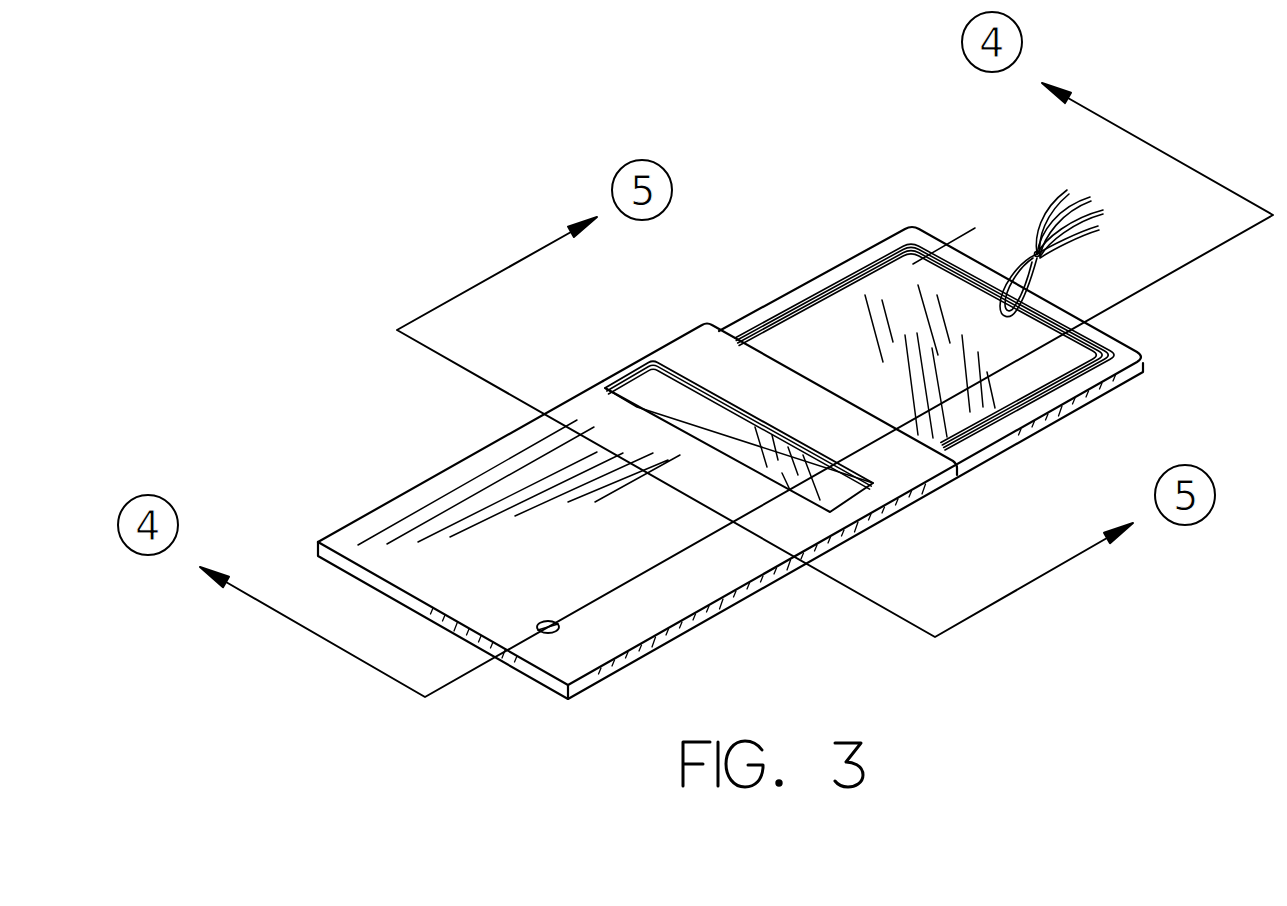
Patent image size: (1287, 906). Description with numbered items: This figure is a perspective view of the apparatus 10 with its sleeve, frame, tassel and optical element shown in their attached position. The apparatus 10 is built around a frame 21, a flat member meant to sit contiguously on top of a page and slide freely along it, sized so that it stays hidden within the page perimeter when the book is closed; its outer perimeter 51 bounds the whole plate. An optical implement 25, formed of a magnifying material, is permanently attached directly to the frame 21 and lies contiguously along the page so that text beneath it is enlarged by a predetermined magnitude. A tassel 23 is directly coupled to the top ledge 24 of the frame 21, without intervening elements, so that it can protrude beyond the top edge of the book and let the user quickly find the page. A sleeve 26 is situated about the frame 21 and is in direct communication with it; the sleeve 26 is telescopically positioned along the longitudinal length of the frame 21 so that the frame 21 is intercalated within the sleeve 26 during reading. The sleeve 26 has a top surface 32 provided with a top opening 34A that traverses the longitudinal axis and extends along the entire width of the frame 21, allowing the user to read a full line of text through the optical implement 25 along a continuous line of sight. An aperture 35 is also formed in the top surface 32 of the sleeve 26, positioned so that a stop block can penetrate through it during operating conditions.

The apparatus 10 is at (462, 198).
The frame 21 is at (1133, 355).
The tassel 23 is at (1090, 198).
The top ledge 24 is at (1067, 314).
The optical implement 25 is at (913, 263).
The sleeve 26 is at (923, 467).
The top surface 32 is at (688, 583).
The top opening 34A is at (687, 407).
The aperture 35 is at (549, 633).
The outer perimeter 51 is at (1087, 403).